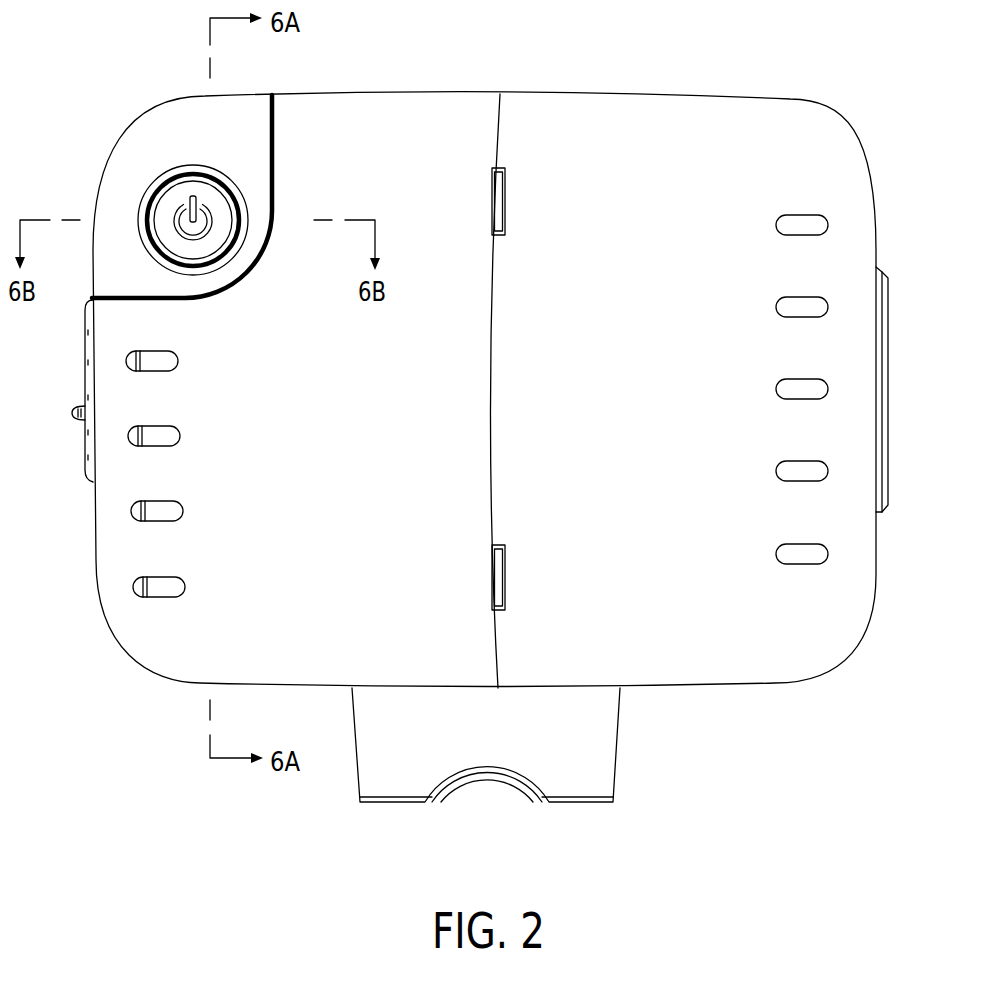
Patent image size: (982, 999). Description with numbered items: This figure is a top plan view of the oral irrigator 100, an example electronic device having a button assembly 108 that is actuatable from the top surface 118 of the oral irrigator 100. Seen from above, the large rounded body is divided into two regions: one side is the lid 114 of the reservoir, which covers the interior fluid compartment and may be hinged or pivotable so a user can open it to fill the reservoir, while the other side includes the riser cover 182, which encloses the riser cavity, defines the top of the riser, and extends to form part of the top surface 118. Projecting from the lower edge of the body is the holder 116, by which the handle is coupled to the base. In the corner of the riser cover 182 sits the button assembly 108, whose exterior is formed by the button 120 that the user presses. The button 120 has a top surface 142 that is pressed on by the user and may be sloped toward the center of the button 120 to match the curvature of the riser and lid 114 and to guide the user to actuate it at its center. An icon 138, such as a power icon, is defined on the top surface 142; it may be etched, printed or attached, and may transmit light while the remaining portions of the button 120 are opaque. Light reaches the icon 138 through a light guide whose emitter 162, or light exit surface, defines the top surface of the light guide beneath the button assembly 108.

The oral irrigator 100 is at (560, 58).
The lid 114 is at (800, 128).
The top surface 118 is at (168, 637).
The holder 116 is at (590, 745).
The riser cover 182 is at (132, 130).
The button assembly 108 is at (218, 195).
The button 120 is at (160, 178).
The top surface 142 is at (148, 222).
The emitter 162 is at (193, 177).
The icon 138 is at (193, 240).